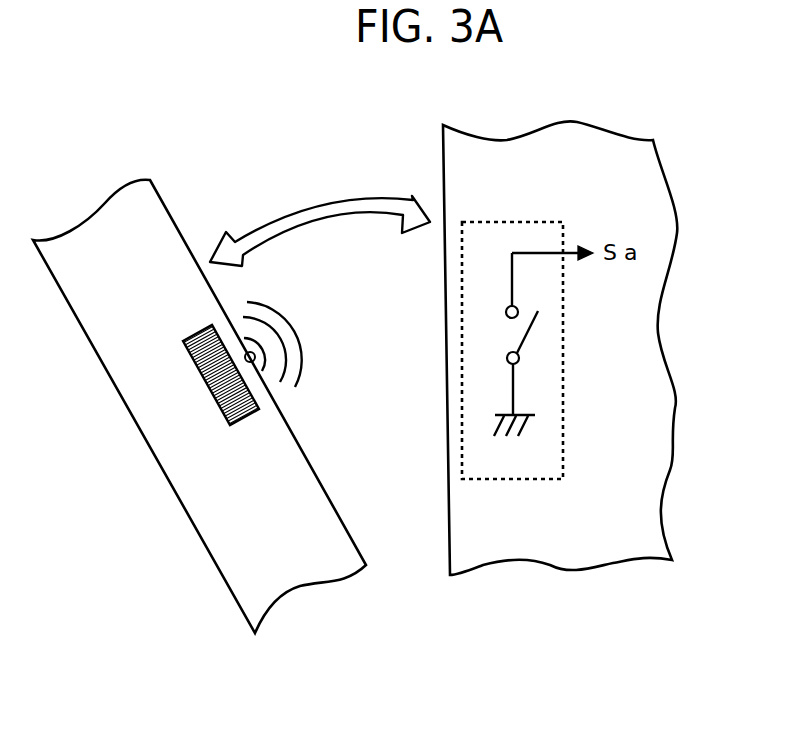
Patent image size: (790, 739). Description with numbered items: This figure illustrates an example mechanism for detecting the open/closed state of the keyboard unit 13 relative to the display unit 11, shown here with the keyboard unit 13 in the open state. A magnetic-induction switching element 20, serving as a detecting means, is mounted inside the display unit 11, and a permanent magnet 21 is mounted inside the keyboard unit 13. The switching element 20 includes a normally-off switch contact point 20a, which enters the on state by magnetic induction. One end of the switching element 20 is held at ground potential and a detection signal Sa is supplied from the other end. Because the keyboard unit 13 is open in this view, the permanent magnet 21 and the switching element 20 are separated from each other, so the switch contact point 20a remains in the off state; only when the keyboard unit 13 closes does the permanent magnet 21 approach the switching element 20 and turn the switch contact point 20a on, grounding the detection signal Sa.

The display unit 11 is at (573, 122).
The keyboard unit 13 is at (113, 380).
The magnetic-induction switching element 20 is at (513, 220).
The switch contact point 20a is at (530, 330).
The permanent magnet 21 is at (259, 409).